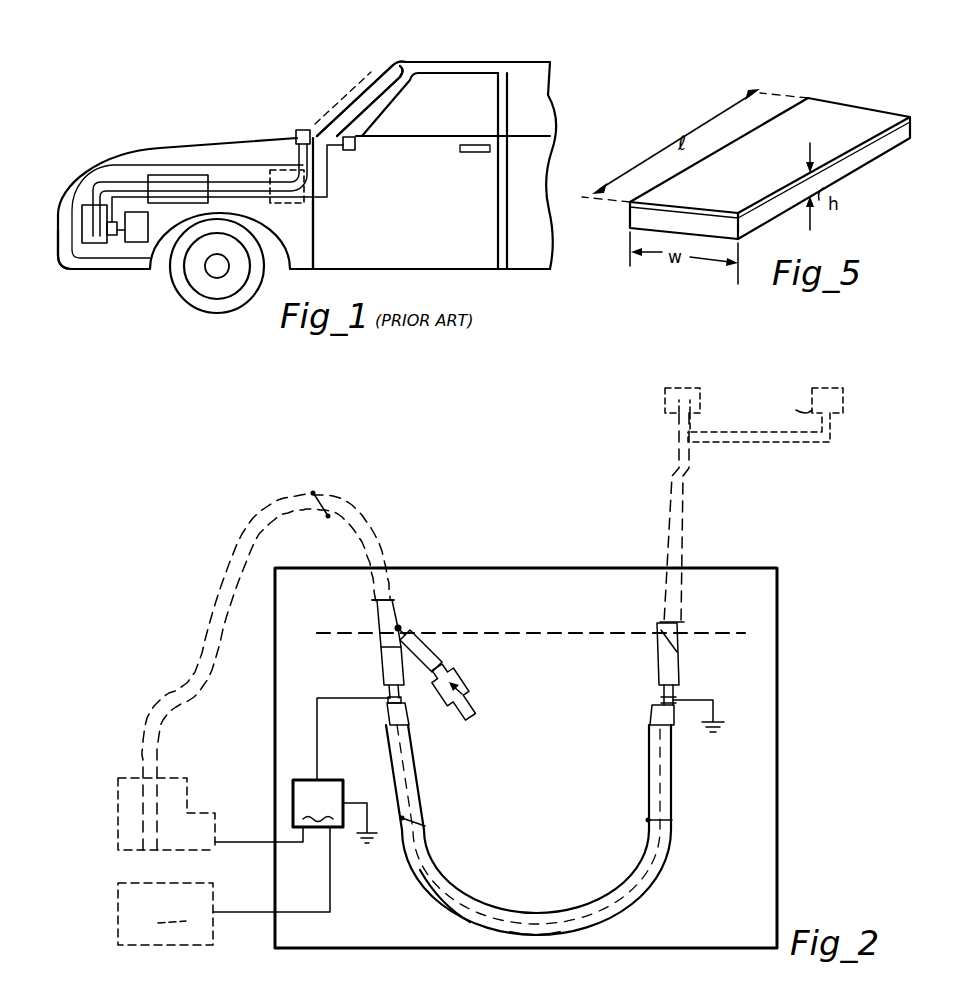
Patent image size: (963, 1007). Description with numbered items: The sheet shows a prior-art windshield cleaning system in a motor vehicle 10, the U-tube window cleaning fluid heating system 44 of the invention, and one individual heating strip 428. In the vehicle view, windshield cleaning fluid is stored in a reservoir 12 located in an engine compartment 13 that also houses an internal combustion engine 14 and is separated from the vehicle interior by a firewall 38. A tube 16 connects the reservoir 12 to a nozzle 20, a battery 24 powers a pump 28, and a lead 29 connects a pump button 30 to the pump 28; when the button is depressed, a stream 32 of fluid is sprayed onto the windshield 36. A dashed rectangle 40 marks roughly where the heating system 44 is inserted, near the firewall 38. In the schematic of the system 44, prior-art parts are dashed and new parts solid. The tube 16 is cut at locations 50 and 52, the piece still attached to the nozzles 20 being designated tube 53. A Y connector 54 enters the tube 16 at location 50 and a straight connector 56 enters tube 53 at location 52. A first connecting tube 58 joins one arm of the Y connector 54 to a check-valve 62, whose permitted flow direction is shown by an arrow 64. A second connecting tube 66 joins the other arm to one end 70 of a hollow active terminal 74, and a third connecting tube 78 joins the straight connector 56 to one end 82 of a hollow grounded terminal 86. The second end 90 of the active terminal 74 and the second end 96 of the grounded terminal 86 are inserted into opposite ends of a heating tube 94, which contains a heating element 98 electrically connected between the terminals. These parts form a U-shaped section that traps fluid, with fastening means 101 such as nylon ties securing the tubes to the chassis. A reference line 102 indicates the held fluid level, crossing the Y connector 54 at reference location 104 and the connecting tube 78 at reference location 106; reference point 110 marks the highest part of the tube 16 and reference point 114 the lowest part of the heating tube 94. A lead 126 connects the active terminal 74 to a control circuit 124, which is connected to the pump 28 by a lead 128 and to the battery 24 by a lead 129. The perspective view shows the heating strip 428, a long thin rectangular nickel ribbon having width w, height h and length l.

In FIG. 1, the motor vehicle 10 is at (472, 57).
In FIG. 1, the reservoir 12 is at (82, 246).
In FIG. 2, the reservoir 12 is at (141, 776).
In FIG. 1, the engine compartment 13 is at (63, 212).
In FIG. 1, the internal combustion engine 14 is at (173, 175).
In FIG. 1, the tube 16 is at (108, 165).
In FIG. 2, the tube 16 is at (202, 643).
In FIG. 1, the nozzle 20 is at (300, 130).
In FIG. 2, the nozzle 20 is at (664, 400).
In FIG. 1, the battery 24 is at (142, 244).
In FIG. 2, the battery 24 is at (118, 946).
In FIG. 1, the pump 28 is at (114, 237).
In FIG. 2, the pump 28 is at (192, 812).
In FIG. 1, the lead 29 is at (328, 172).
In FIG. 1, the pump button 30 is at (355, 143).
In FIG. 1, the stream 32 is at (343, 106).
In FIG. 1, the windshield 36 is at (382, 78).
In FIG. 1, the firewall 38 is at (314, 241).
In FIG. 1, the dashed rectangle 40 is at (278, 165).
In FIG. 2, the U-tube window cleaning fluid heating system 44 is at (657, 957).
In FIG. 2, the location 50 is at (372, 601).
In FIG. 2, the location 52 is at (665, 620).
In FIG. 2, the tube 53 is at (684, 533).
In FIG. 2, the Y connector 54 is at (391, 600).
In FIG. 2, the straight connector 56 is at (676, 622).
In FIG. 2, the first connecting tube 58 is at (443, 647).
In FIG. 2, the check-valve 62 is at (452, 708).
In FIG. 2, the arrow 64 is at (470, 687).
In FIG. 2, the second connecting tube 66 is at (382, 661).
In FIG. 2, the end of active terminal 70 is at (389, 690).
In FIG. 2, the hollow active terminal 74 is at (389, 702).
In FIG. 2, the third connecting tube 78 is at (658, 660).
In FIG. 2, the end of grounded terminal 82 is at (676, 692).
In FIG. 2, the hollow grounded terminal 86 is at (661, 697).
In FIG. 2, the second end of active terminal 90 is at (395, 705).
In FIG. 2, the heating tube 94 is at (418, 789).
In FIG. 2, the second end of grounded terminal 96 is at (652, 712).
In FIG. 2, the heating element 98 is at (437, 868).
In FIG. 2, the fastening means 101 is at (335, 500).
In FIG. 2, the reference line 102 is at (322, 637).
In FIG. 2, the reference location 104 is at (400, 627).
In FIG. 2, the reference location 106 is at (677, 650).
In FIG. 2, the reference point 110 is at (312, 493).
In FIG. 2, the reference point 114 is at (533, 936).
In FIG. 2, the control circuit 124 is at (293, 790).
In FIG. 2, the lead 126 is at (318, 728).
In FIG. 2, the lead 128 is at (220, 843).
In FIG. 2, the lead 129 is at (332, 880).
In FIG. 5, the heating strip 428 is at (790, 66).